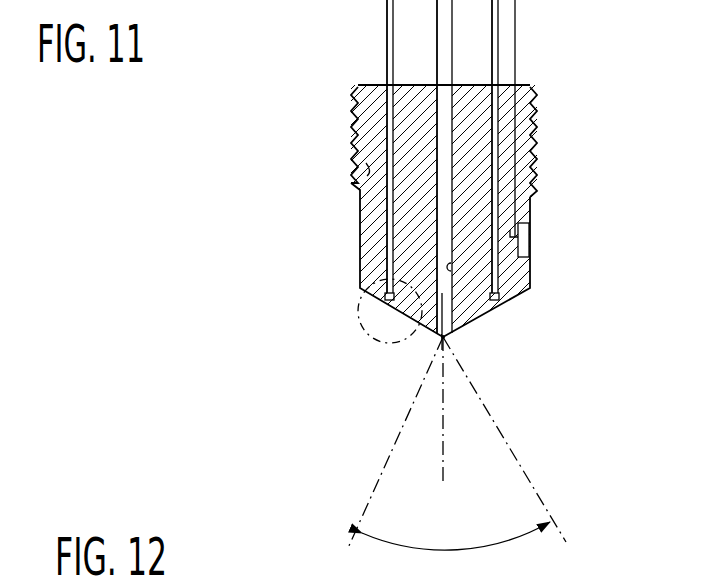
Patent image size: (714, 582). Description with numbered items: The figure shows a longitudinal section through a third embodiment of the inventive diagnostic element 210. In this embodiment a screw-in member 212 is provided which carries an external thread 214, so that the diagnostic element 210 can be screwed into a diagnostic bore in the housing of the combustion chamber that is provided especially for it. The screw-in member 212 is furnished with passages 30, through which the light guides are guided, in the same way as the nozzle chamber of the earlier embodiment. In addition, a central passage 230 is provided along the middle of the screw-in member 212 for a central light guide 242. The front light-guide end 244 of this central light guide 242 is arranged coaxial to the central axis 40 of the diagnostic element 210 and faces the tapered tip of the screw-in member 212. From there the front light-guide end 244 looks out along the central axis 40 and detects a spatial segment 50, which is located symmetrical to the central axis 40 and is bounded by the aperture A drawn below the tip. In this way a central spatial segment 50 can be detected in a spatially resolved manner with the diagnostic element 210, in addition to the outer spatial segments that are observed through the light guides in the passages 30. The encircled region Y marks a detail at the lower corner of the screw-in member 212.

The diagnostic element 210 is at (334, 143).
The screw-in member 212 is at (353, 182).
The external thread 214 is at (527, 124).
The passages 30 is at (388, 210).
The central passage 230 is at (450, 268).
The central light guide 242 is at (455, 304).
The front light-guide end 244 is at (438, 340).
The central axis 40 is at (443, 463).
The spatial segment 50 is at (553, 532).
The aperture A is at (430, 547).
The detail region Y is at (380, 319).